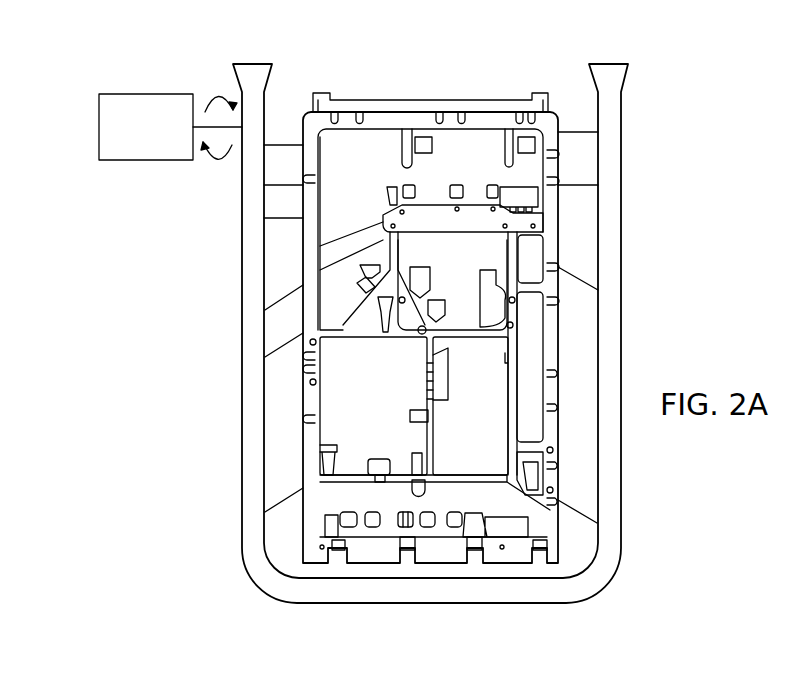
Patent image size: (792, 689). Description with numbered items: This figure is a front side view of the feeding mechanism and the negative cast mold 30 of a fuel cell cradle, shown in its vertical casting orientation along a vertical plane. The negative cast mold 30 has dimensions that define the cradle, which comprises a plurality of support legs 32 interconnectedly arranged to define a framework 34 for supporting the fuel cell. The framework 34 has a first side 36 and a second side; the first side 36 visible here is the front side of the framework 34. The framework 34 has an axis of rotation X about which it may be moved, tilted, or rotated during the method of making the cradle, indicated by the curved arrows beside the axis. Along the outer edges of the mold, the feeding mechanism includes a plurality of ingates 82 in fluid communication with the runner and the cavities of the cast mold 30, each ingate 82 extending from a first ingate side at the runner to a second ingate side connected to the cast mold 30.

The negative cast mold 30 is at (315, 395).
The support legs 32 is at (310, 265).
The framework 34 is at (303, 278).
The first side 36 is at (253, 201).
The ingates 82 is at (293, 175).